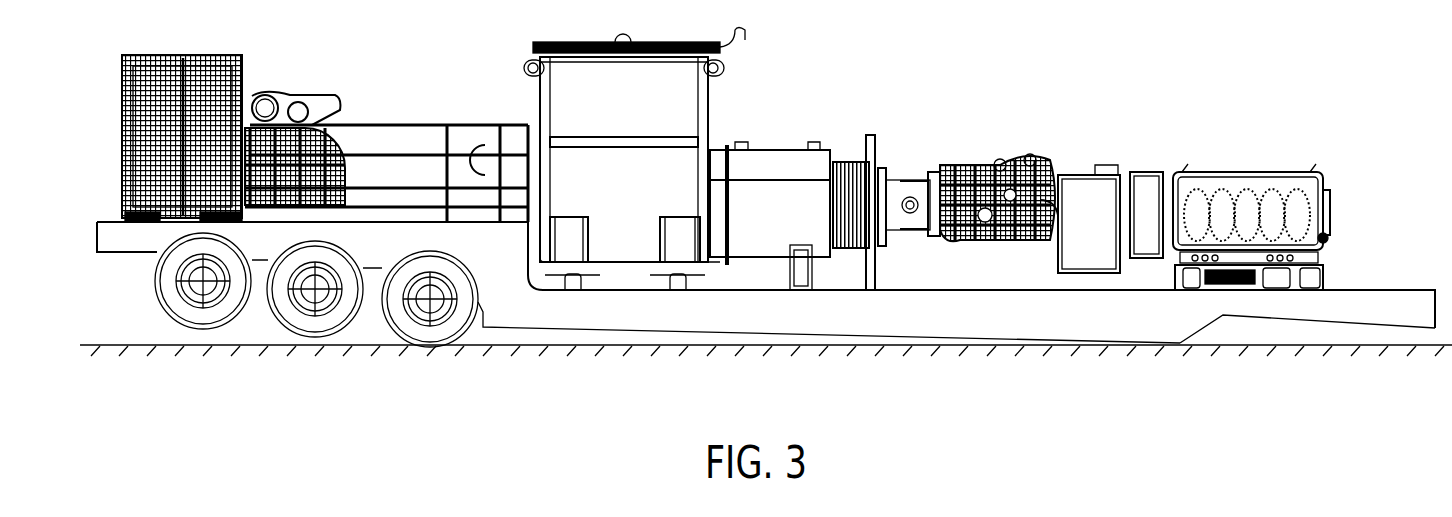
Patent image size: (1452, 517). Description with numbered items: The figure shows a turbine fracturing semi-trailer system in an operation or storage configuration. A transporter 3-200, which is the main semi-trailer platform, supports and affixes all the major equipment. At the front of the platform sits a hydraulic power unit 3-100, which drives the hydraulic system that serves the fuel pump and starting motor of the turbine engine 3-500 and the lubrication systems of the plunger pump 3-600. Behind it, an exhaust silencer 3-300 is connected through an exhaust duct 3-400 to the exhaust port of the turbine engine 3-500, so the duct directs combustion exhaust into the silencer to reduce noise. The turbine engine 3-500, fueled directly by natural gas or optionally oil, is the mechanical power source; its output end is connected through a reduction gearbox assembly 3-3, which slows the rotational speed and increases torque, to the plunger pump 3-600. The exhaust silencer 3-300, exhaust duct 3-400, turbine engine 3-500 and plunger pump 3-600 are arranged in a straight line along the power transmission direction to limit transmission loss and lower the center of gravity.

The hydraulic power unit 3-100 is at (283, 185).
The transporter 3-200 is at (502, 258).
The exhaust silencer 3-300 is at (650, 170).
The exhaust duct 3-400 is at (775, 214).
The turbine engine 3-500 is at (972, 239).
The reduction gearbox assembly 3-3 is at (1093, 225).
The plunger pump 3-600 is at (1255, 225).